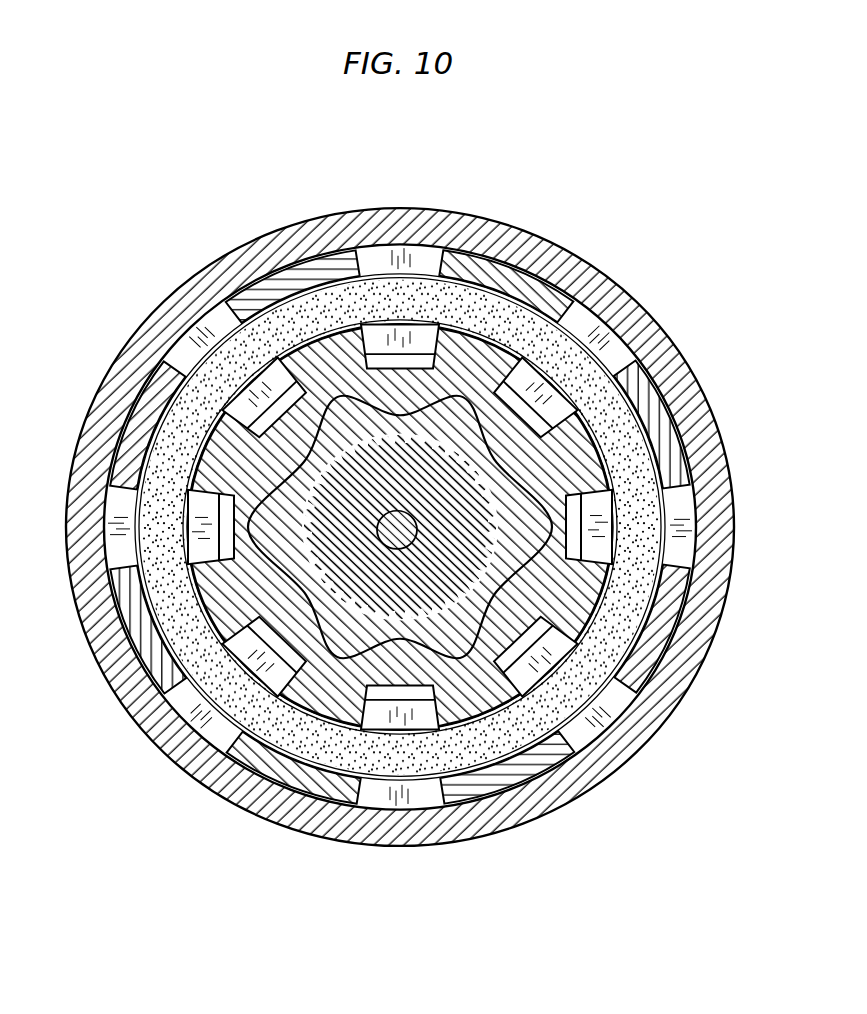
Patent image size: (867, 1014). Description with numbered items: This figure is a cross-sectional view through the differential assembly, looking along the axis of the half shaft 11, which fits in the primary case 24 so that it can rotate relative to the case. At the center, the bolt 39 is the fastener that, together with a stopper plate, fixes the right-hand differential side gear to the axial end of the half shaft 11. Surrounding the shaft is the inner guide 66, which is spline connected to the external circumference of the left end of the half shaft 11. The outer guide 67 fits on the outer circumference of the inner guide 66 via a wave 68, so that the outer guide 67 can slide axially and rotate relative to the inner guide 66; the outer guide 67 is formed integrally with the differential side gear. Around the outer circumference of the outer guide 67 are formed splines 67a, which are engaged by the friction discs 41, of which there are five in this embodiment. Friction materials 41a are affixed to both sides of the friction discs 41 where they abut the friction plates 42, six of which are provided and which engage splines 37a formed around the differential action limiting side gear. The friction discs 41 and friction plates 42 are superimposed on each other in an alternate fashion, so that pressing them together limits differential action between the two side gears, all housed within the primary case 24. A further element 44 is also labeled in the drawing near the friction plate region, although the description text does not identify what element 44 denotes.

The half shaft 11 is at (441, 500).
The primary case 24 is at (545, 232).
The splines 37a is at (287, 278).
The bolt 39 is at (400, 552).
The friction discs 41 is at (222, 708).
The friction materials 41a is at (423, 768).
The friction plates 42 is at (176, 337).
The yoke 44 is at (463, 270).
The inner guide 66 is at (342, 436).
The outer guide 67 is at (477, 568).
The splines 67a is at (312, 375).
The wave 68 is at (304, 536).